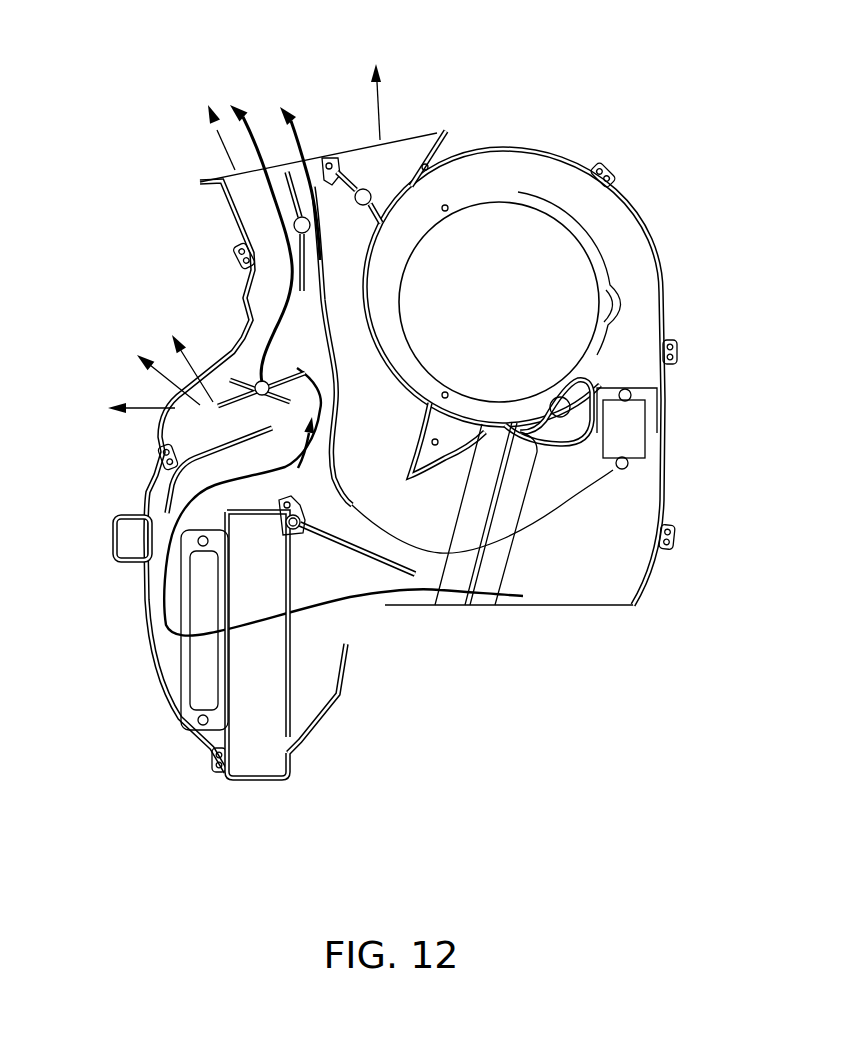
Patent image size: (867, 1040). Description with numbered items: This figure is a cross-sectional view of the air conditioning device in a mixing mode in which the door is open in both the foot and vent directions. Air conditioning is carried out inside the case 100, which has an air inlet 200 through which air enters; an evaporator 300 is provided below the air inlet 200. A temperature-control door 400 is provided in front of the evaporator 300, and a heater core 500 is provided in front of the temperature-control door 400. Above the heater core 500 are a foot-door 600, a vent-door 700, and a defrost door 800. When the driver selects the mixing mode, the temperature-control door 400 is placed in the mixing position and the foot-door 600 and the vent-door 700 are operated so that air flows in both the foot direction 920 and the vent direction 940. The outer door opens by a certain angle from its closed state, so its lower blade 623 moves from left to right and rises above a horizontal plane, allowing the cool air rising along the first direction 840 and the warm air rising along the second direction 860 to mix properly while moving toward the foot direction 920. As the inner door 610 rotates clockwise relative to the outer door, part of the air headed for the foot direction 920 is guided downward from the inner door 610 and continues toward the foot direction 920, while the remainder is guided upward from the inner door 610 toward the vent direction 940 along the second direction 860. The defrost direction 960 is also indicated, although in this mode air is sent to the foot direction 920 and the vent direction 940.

The case 100 is at (593, 607).
The air inlet 200 is at (527, 250).
The evaporator 300 is at (485, 580).
The temperature-control door 400 is at (382, 560).
The heater core 500 is at (253, 722).
The foot-door 600 is at (248, 433).
The inner door 610 is at (222, 381).
The lower blade 623 is at (247, 366).
The vent-door 700 is at (279, 198).
The defrost door 800 is at (352, 172).
The first direction 840 is at (300, 187).
The second direction 860 is at (280, 200).
The foot direction 920 is at (137, 412).
The vent direction 940 is at (220, 146).
The defrost direction 960 is at (381, 125).